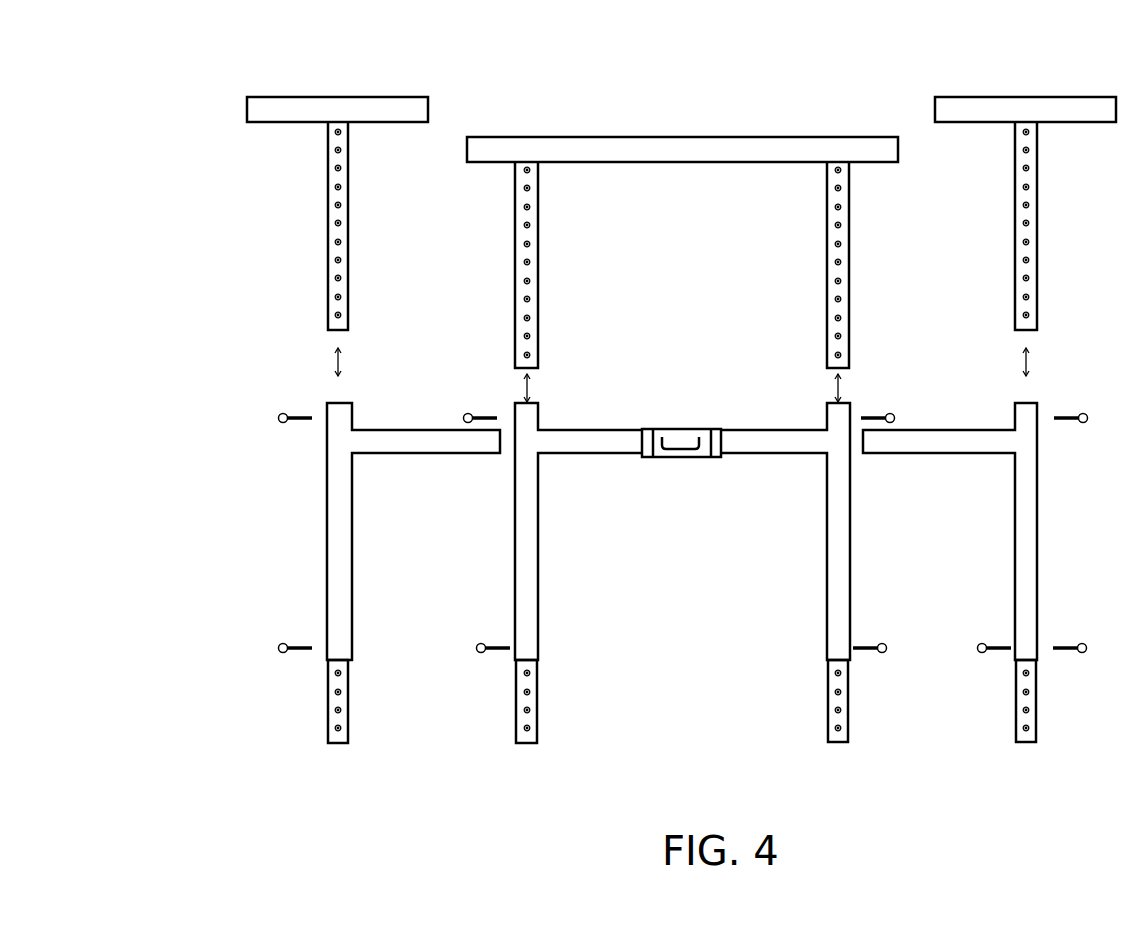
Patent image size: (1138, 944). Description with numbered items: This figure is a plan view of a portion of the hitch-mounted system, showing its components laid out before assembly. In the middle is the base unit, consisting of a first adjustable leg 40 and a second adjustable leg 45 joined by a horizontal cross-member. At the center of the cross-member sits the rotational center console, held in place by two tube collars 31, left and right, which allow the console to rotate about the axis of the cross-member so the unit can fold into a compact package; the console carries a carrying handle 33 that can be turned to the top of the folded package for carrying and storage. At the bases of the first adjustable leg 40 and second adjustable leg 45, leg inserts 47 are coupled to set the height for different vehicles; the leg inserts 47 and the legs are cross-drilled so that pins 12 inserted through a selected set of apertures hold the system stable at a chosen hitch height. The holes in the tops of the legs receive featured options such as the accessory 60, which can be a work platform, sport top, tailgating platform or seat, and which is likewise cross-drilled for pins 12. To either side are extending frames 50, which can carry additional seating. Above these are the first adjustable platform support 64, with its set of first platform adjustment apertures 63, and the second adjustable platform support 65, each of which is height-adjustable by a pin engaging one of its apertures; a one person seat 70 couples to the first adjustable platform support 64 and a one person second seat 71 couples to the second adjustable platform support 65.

The pins 12 is at (282, 413).
The tube collars 31 is at (648, 429).
The carrying handle 33 is at (677, 438).
The first adjustable leg 40 is at (515, 563).
The second adjustable leg 45 is at (850, 583).
The leg inserts 47 is at (350, 700).
The extending frame 50 is at (327, 513).
The accessory 60 is at (688, 163).
The first platform adjustment apertures 63 is at (335, 168).
The first adjustable platform support 64 is at (328, 235).
The second adjustable platform support 65 is at (1038, 210).
The one person seat 70 is at (247, 107).
The one person second seat 71 is at (935, 112).